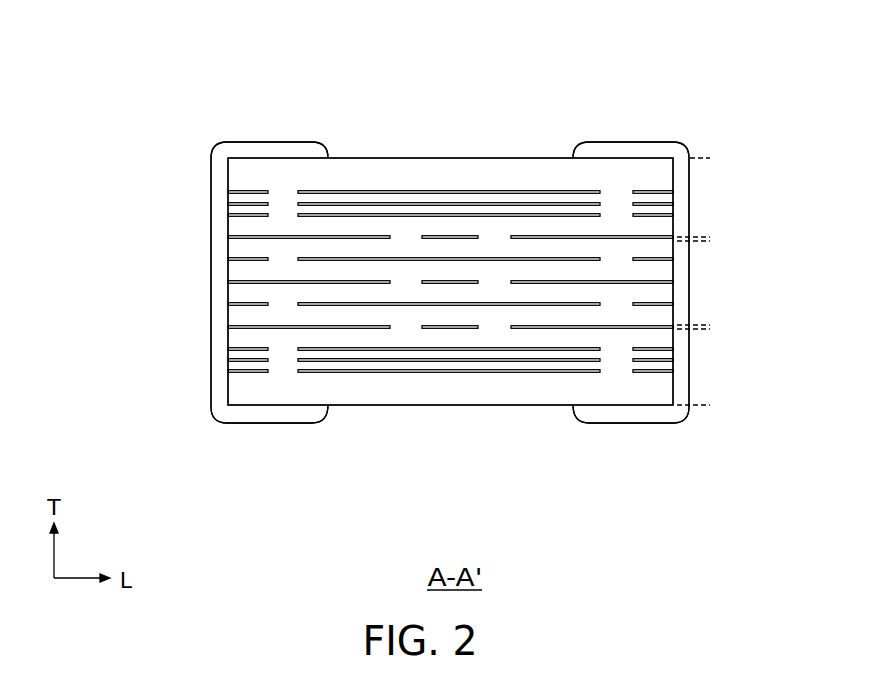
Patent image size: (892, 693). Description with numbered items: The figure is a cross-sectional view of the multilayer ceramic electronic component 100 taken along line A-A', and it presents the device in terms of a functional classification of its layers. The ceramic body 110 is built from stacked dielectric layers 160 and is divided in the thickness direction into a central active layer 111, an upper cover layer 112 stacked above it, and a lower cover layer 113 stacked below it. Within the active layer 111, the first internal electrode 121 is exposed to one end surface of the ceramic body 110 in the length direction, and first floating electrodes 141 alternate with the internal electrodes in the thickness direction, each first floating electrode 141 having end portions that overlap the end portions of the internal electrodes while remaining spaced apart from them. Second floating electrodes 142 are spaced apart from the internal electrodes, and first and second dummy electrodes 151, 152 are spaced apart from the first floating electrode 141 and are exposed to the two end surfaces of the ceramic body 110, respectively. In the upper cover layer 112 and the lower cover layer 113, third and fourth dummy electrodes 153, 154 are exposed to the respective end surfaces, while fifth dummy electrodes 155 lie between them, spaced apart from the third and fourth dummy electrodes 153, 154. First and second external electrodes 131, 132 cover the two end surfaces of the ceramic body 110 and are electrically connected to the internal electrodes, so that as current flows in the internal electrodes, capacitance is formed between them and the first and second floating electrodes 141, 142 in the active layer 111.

The multilayer ceramic electronic component 100 is at (251, 49).
The ceramic body 110 is at (436, 152).
The active layer 111 is at (711, 241).
The upper cover layer 112 is at (711, 158).
The lower cover layer 113 is at (711, 329).
The first internal electrode 121 is at (262, 284).
The first external electrode 131 is at (250, 150).
The second external electrode 132 is at (650, 150).
The first floating electrode 141 is at (313, 261).
The second floating electrode 142 is at (472, 329).
The first dummy electrode 151 is at (247, 308).
The second dummy electrode 152 is at (656, 306).
The third dummy electrode 153 is at (241, 373).
The fourth dummy electrode 154 is at (658, 376).
The fifth dummy electrode 155 is at (522, 374).
The dielectric layer 160 is at (658, 273).